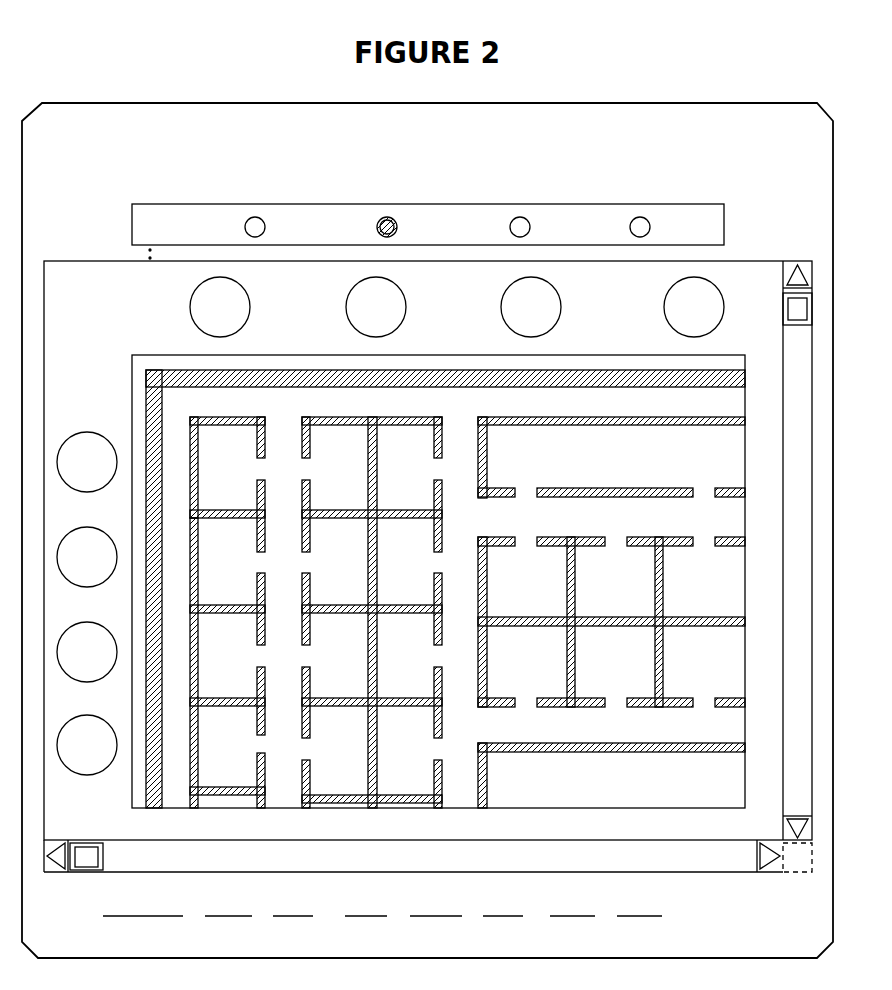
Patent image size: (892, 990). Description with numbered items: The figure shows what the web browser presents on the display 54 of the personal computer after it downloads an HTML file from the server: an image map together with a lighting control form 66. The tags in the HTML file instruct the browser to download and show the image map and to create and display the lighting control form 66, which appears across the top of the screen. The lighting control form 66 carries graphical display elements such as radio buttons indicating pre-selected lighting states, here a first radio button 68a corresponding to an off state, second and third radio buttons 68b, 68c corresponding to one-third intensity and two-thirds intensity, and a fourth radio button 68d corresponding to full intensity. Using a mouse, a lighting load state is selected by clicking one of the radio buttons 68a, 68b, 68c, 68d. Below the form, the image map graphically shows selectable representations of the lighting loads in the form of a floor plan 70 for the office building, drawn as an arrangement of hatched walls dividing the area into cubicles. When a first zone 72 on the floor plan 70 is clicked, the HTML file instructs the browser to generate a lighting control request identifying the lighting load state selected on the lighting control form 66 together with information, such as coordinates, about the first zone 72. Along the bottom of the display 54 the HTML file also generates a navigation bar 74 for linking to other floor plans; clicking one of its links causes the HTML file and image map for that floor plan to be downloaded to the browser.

The display 54 is at (695, 103).
The lighting control form 66 is at (444, 242).
The first radio button 68a is at (255, 237).
The second radio button 68b is at (387, 237).
The third radio button 68c is at (524, 236).
The fourth radio button 68d is at (710, 228).
The floor plan 70 is at (405, 556).
The first zone 72 is at (239, 478).
The navigation bar 74 is at (690, 902).